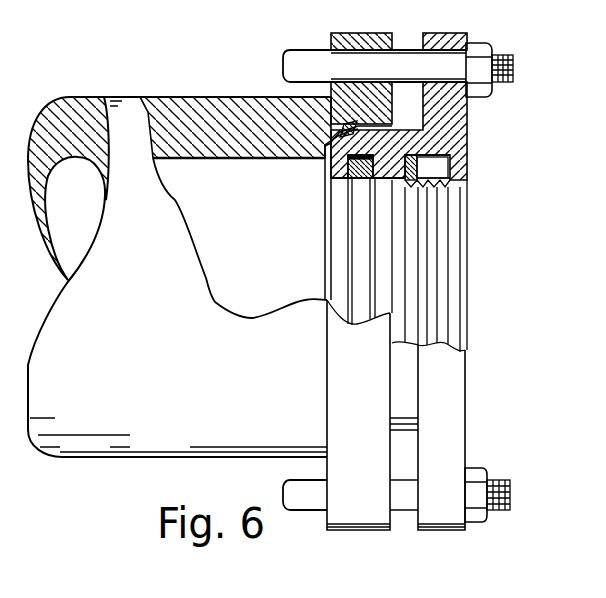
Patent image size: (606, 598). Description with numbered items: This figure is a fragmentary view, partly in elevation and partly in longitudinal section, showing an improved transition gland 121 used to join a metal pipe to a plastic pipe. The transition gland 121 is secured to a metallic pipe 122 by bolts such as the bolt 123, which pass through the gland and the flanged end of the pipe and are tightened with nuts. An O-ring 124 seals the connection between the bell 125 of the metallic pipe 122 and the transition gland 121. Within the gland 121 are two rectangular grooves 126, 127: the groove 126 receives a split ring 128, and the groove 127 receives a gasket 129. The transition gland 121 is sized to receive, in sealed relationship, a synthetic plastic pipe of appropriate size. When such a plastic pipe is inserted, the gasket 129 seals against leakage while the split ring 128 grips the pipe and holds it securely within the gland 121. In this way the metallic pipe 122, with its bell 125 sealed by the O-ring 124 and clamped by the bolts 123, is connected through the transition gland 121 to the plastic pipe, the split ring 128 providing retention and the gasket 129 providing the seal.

The transition gland 121 is at (468, 105).
The metallic pipe 122 is at (115, 105).
The bolt 123 is at (492, 52).
The O-ring 124 is at (303, 92).
The bell 125 is at (383, 33).
The rectangular groove 126 is at (450, 163).
The rectangular groove 127 is at (377, 149).
The split ring 128 is at (437, 184).
The gasket 129 is at (365, 182).